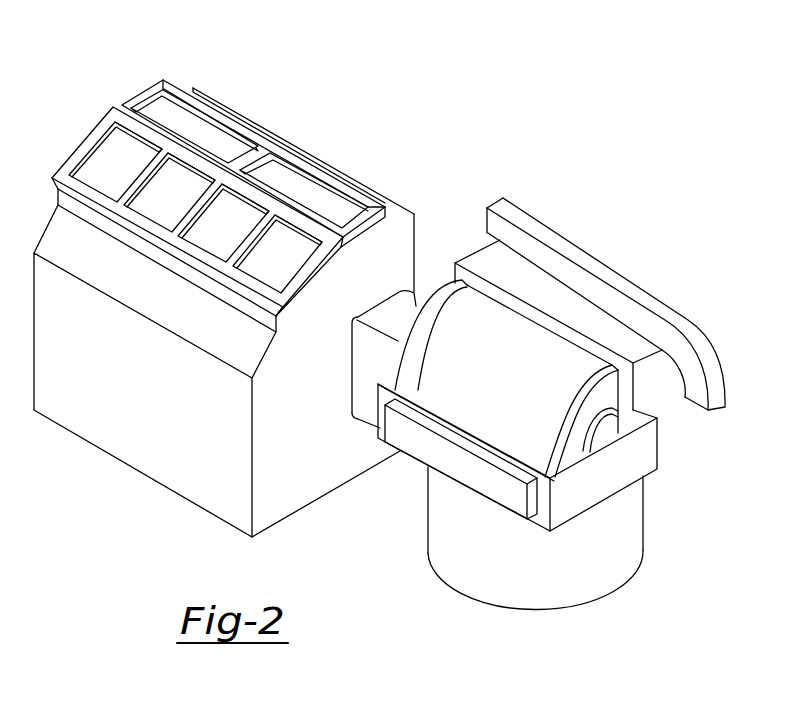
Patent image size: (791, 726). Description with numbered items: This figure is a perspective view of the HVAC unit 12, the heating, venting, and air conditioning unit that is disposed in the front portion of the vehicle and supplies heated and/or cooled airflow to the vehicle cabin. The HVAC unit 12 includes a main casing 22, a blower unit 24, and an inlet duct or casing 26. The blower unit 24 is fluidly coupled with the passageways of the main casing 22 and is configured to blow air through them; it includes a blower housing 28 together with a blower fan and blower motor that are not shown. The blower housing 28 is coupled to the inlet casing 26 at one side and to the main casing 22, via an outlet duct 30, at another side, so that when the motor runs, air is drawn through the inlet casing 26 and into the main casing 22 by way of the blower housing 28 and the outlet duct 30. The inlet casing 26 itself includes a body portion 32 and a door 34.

The HVAC unit 12 is at (482, 74).
The main casing 22 is at (327, 116).
The blower unit 24 is at (638, 559).
The inlet casing 26 is at (628, 242).
The blower housing 28 is at (569, 587).
The outlet duct 30 is at (393, 305).
The body portion 32 is at (665, 425).
The door 34 is at (483, 412).